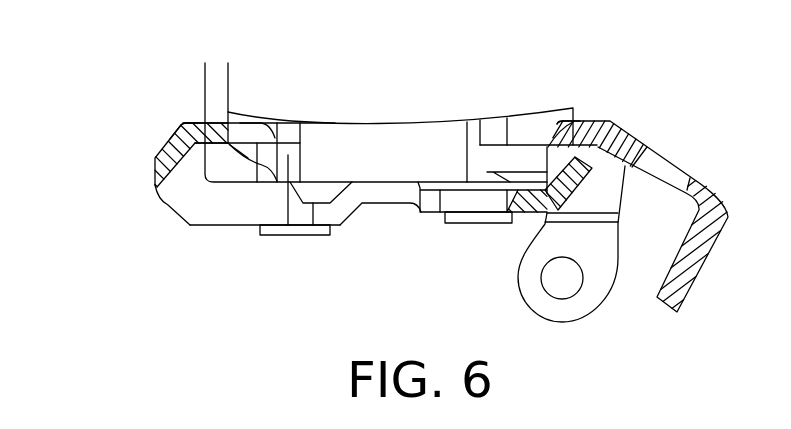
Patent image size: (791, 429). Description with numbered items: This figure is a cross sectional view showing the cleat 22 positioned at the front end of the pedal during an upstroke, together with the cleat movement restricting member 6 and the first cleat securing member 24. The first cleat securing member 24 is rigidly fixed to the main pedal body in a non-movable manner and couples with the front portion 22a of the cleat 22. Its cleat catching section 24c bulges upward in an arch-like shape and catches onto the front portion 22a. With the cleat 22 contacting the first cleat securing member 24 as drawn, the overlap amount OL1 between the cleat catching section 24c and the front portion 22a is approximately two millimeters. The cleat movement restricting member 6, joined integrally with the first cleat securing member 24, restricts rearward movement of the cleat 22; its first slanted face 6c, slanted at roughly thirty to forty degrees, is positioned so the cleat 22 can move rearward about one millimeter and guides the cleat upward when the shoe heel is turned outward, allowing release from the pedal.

The cleat 22 is at (412, 115).
The front portion of the cleat 22a is at (233, 168).
The first cleat securing member 24 is at (147, 133).
The cleat catching section 24c is at (180, 132).
The overlap amount OL1 is at (260, 80).
The cleat movement restricting member 6 is at (555, 145).
The first slanted face 6c is at (573, 122).